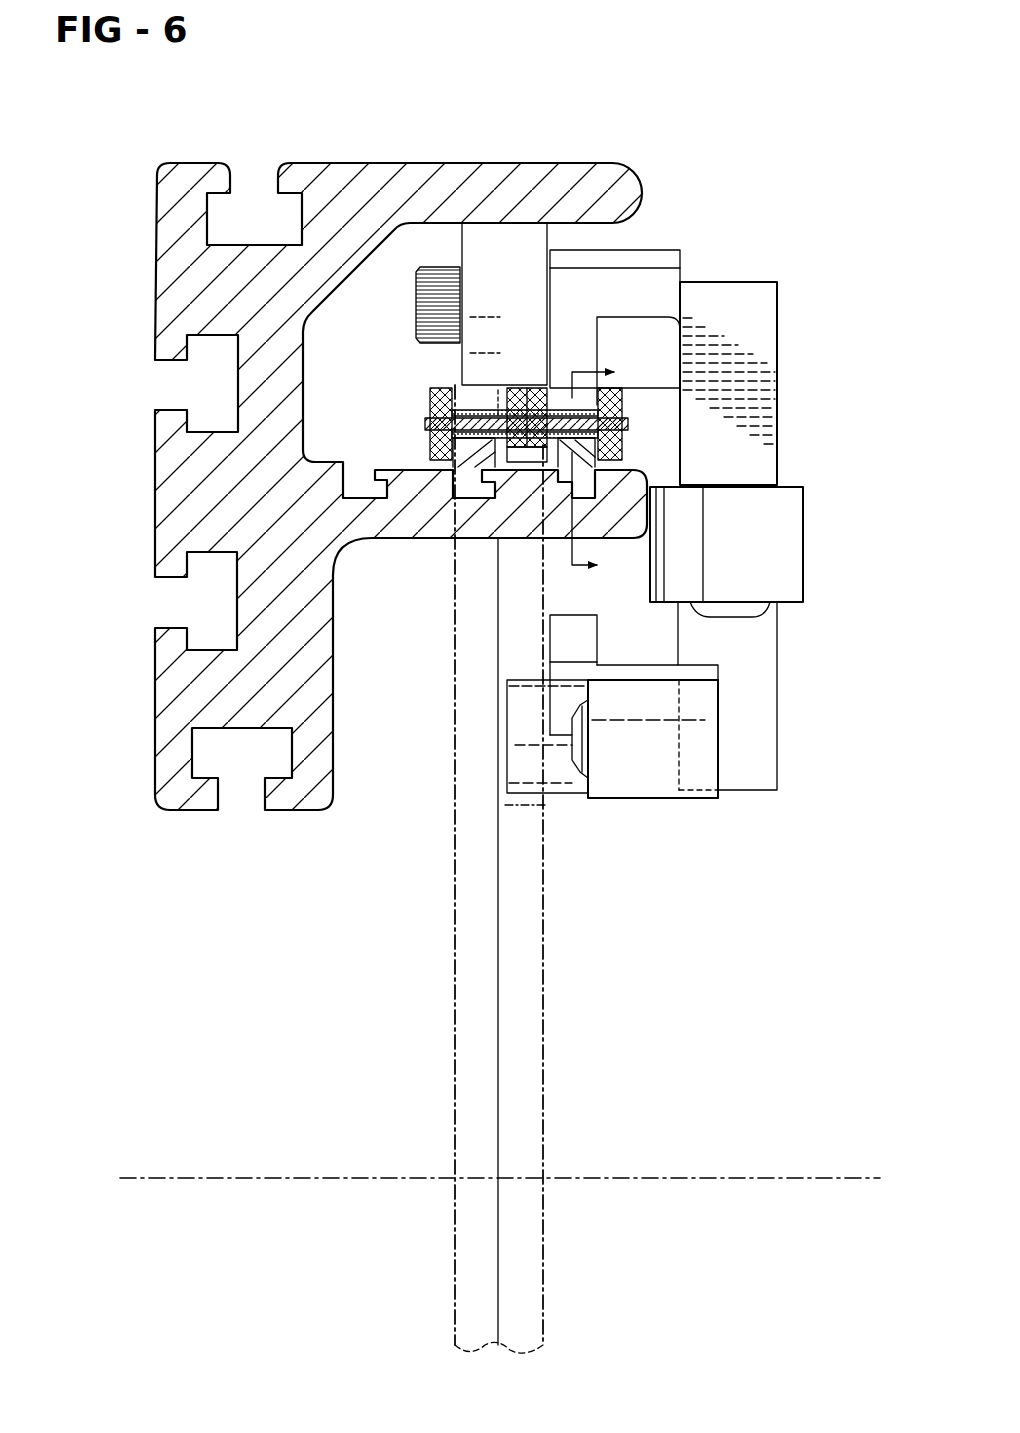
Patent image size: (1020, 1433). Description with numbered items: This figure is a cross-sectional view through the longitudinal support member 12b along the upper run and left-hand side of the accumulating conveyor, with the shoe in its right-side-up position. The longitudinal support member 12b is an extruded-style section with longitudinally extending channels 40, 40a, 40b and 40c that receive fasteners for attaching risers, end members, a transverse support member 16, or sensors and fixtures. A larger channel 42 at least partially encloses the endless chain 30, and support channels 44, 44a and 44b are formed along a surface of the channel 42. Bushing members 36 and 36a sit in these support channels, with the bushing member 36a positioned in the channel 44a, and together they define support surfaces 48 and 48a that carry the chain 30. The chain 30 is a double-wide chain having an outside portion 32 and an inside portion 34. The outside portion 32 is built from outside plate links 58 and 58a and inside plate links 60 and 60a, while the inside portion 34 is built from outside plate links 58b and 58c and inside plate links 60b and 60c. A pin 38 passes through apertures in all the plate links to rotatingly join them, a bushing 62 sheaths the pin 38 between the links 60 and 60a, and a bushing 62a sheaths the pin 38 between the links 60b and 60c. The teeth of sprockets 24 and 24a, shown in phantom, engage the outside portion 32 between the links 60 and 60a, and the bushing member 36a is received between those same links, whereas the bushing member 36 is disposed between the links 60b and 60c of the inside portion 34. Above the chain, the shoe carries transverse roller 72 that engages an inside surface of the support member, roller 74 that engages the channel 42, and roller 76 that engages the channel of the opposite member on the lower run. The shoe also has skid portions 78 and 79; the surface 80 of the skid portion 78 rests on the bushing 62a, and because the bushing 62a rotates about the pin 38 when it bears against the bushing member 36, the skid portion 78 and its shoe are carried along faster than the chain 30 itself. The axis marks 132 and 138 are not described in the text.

The longitudinal support member 12b is at (165, 195).
The endless chain 30 is at (318, 402).
The outside portion 32 is at (392, 378).
The inside portion 34 is at (652, 420).
The bushing member 36 is at (600, 470).
The bushing member 36a is at (430, 470).
The pin 38 is at (430, 420).
The channel 40 is at (218, 215).
The channel 40a is at (198, 352).
The channel 40b is at (213, 640).
The channel 40c is at (207, 742).
The channel 42 is at (385, 280).
The support channel 44 is at (575, 470).
The support channel 44a is at (462, 460).
The support channel 44b is at (337, 480).
The support surface 48 is at (592, 462).
The support surface 48a is at (430, 436).
The outside plate link 58 is at (430, 397).
The outside plate link 58a is at (514, 464).
The outside plate link 58b is at (538, 464).
The outside plate link 58c is at (620, 454).
The inside plate link 60 is at (448, 390).
The inside plate link 60a is at (488, 467).
The inside plate link 60b is at (543, 410).
The inside plate link 60c is at (620, 398).
The bushing 62 is at (473, 412).
The bushing 62a is at (584, 408).
The transverse roller 72 is at (759, 555).
The roller 74 is at (515, 271).
The roller 76 is at (660, 761).
The skid portion 78 is at (654, 298).
The skid portion 79 is at (590, 653).
The surface 80 is at (552, 407).
The axis 132 is at (530, 952).
The axis 138 is at (630, 895).
The sprocket 24a is at (467, 1077).
The sprocket 24 is at (369, 865).
The transverse support member 16 is at (622, 482).